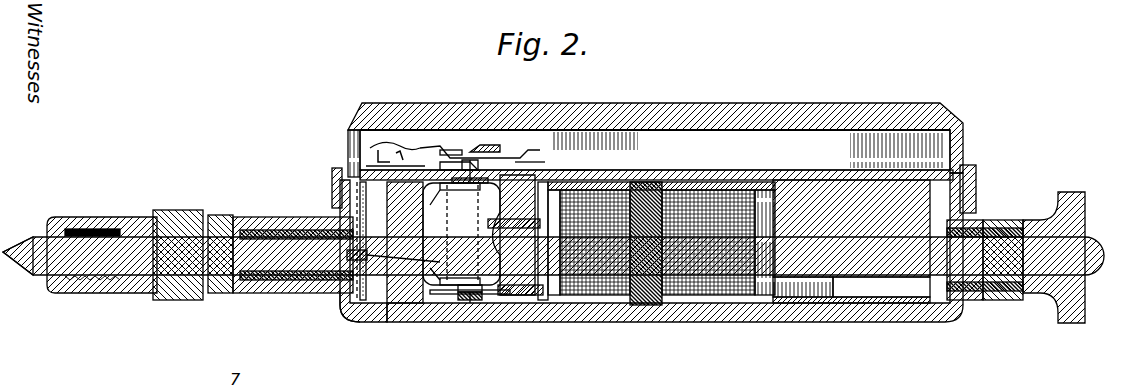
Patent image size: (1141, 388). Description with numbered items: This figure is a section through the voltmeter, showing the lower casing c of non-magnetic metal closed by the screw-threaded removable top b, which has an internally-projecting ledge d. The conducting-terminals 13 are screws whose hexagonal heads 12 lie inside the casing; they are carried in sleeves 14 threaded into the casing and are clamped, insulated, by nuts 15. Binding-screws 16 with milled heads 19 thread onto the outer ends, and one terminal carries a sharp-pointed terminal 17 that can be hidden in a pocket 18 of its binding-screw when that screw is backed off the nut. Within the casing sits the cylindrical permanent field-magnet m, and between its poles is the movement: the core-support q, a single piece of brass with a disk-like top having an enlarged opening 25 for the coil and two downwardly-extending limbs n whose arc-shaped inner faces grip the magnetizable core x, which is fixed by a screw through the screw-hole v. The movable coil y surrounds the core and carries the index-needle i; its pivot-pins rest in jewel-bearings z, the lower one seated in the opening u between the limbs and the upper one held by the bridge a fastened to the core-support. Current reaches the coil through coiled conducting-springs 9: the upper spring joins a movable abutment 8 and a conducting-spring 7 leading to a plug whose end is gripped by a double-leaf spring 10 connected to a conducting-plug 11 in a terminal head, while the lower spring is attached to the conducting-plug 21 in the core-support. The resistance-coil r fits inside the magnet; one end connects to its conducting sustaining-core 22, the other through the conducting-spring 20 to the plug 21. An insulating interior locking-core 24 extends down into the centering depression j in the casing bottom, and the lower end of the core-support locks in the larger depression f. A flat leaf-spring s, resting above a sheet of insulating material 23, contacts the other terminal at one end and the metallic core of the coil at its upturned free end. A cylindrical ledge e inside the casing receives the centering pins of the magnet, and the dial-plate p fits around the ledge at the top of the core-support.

The conducting-spring 7 is at (379, 150).
The movable abutment 8 is at (408, 148).
The coiled conducting-spring 9 is at (424, 166).
The double-leaf spring 10 is at (452, 197).
The conducting-plug 11 is at (395, 261).
The head of the terminal 12 is at (340, 303).
The conducting-terminal 13 is at (145, 262).
The sleeve 14 is at (975, 225).
The nut 15 is at (222, 214).
The binding-screw 16 is at (84, 220).
The sharp-pointed terminal 17 is at (25, 270).
The pocket 18 is at (92, 290).
The milled head 19 is at (175, 300).
The conducting-spring 20 is at (546, 286).
The conducting-plug 21 is at (505, 300).
The sustaining-core 22 is at (686, 300).
The sheet of insulating material 23 is at (840, 305).
The interior locking-core 24 is at (660, 300).
The enlarged opening 25 is at (538, 178).
The bridge a is at (492, 152).
The removable top b is at (668, 140).
The casing c is at (966, 315).
The ledge d is at (334, 172).
The cylindrical ledge e is at (851, 239).
The centering depression f is at (358, 326).
The index-needle i is at (656, 161).
The centering depression j is at (625, 300).
The permanent field-magnet m is at (832, 287).
The limb n is at (483, 235).
The dial-plate p is at (326, 186).
The core-support q is at (586, 173).
The resistance-coil r is at (600, 298).
The flat leaf-spring s is at (881, 287).
The opening u is at (442, 305).
The screw-hole v is at (368, 244).
The magnetizable core x is at (461, 234).
The movable coil y is at (460, 232).
The jewel-bearing z is at (471, 158).